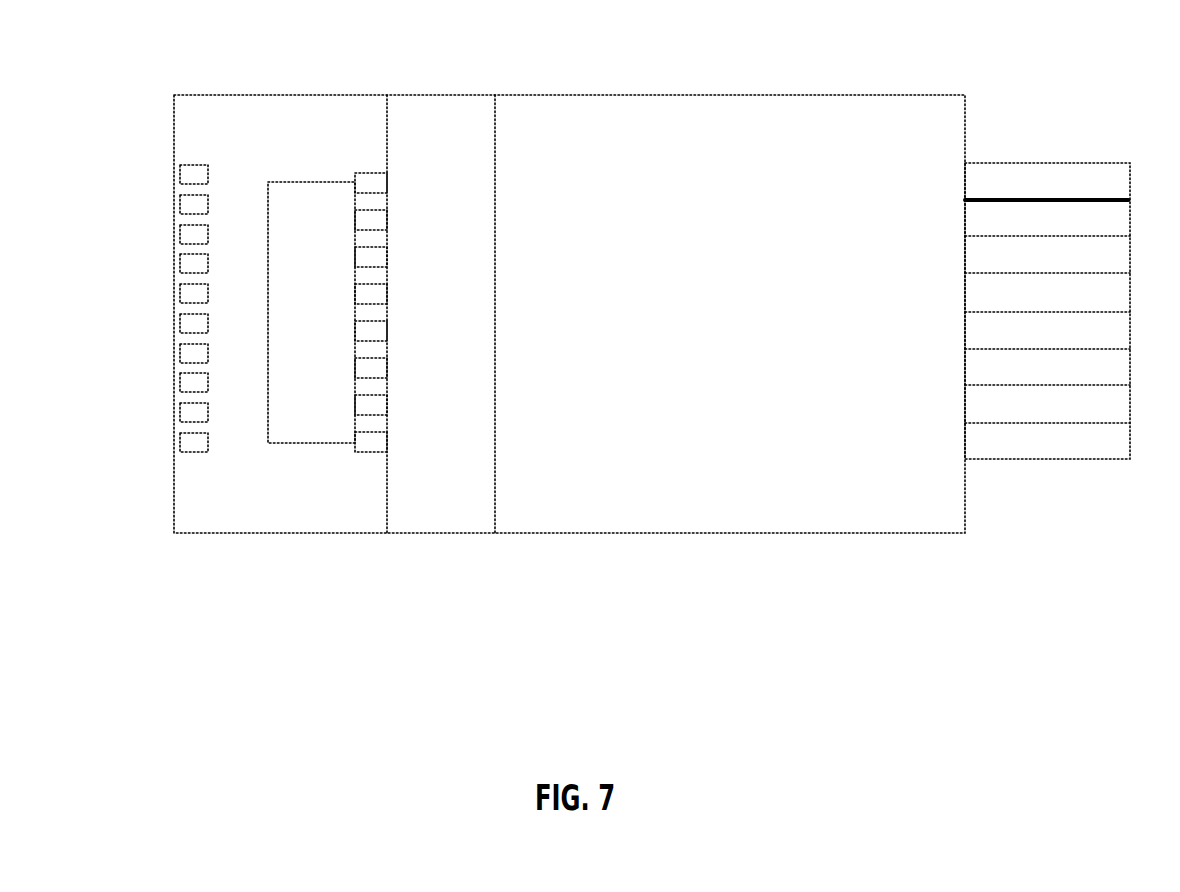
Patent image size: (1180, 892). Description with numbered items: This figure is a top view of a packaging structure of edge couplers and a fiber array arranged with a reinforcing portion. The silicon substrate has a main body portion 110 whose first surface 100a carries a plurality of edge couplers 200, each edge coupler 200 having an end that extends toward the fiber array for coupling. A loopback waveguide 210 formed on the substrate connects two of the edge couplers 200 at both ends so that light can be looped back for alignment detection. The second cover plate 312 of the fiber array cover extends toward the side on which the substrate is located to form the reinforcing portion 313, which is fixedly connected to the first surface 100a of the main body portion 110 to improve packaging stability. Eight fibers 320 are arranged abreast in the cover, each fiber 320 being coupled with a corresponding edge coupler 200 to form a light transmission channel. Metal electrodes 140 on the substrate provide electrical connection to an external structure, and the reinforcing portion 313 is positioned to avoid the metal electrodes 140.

The main body portion 110 is at (270, 95).
The first surface 100a is at (322, 115).
The metal electrode 140 is at (197, 446).
The edge coupler 200 is at (375, 180).
The loopback waveguide 210 is at (278, 182).
The second cover plate 312 is at (550, 115).
The reinforcing portion 313 is at (450, 115).
The fiber 320 is at (1013, 163).